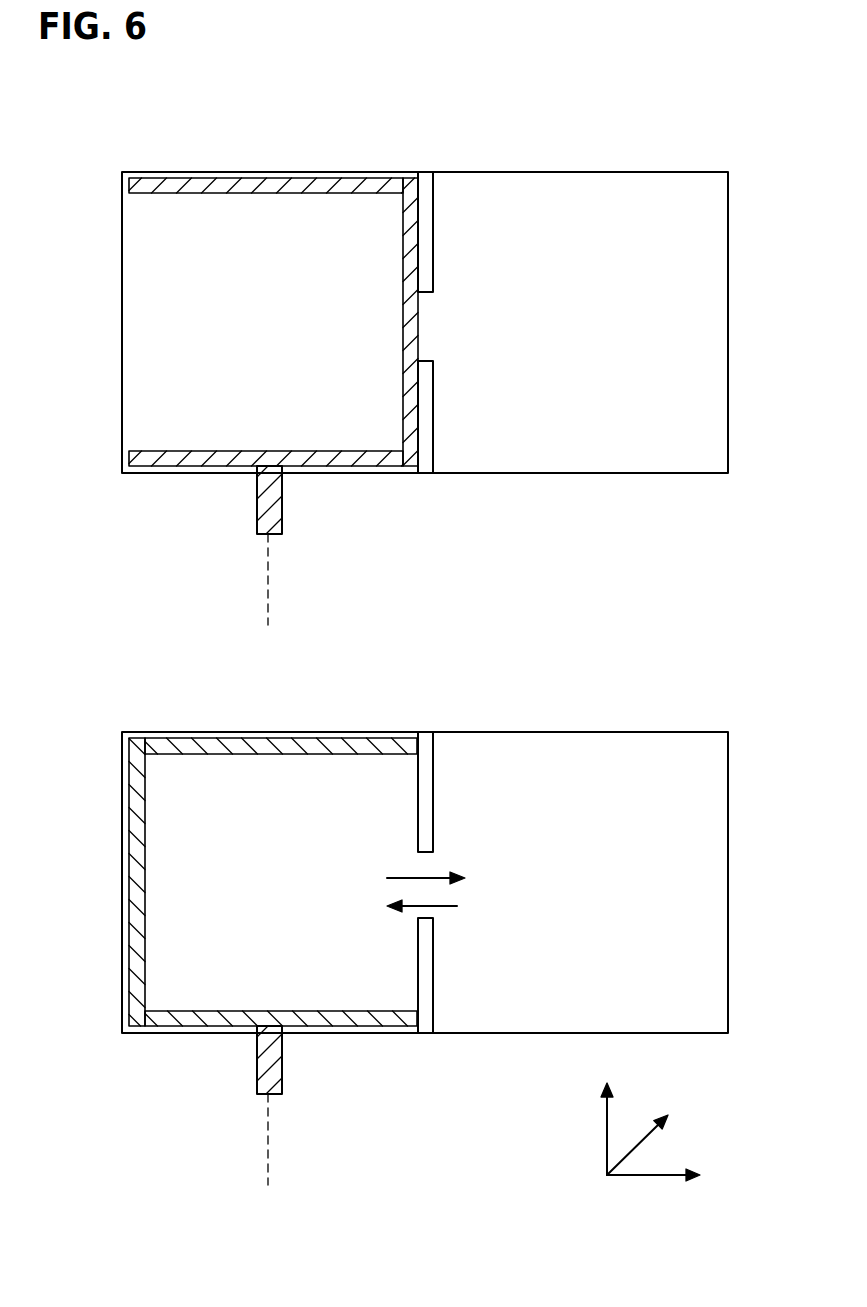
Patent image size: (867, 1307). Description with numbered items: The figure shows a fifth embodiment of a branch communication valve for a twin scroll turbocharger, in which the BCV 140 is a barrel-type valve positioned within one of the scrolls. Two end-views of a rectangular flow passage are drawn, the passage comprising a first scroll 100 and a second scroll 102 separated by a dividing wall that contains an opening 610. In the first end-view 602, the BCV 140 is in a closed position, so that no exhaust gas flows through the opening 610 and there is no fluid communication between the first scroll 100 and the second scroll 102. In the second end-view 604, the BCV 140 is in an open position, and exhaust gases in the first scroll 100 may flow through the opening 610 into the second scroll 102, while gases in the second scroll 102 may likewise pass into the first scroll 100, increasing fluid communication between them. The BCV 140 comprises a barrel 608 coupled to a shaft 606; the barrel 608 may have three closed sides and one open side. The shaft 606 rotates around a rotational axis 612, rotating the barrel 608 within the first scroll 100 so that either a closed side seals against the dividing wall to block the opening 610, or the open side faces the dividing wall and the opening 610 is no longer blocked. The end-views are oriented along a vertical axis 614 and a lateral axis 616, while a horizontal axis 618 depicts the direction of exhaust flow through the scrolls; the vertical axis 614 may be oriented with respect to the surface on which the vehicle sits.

The first end-view 602 is at (637, 88).
The second end-view 604 is at (637, 655).
The first scroll 100 is at (152, 322).
The second scroll 102 is at (682, 322).
The BCV 140 is at (162, 507).
The shaft 606 is at (283, 500).
The barrel 608 is at (288, 187).
The opening 610 is at (440, 323).
The rotational axis 612 is at (268, 578).
The vertical axis 614 is at (609, 1115).
The lateral axis 616 is at (652, 1175).
The horizontal axis 618 is at (645, 1140).